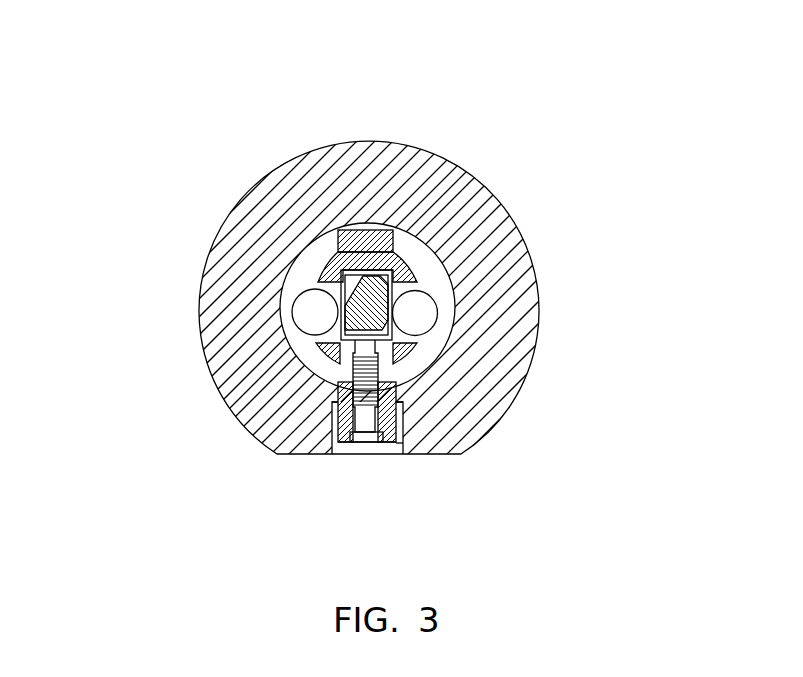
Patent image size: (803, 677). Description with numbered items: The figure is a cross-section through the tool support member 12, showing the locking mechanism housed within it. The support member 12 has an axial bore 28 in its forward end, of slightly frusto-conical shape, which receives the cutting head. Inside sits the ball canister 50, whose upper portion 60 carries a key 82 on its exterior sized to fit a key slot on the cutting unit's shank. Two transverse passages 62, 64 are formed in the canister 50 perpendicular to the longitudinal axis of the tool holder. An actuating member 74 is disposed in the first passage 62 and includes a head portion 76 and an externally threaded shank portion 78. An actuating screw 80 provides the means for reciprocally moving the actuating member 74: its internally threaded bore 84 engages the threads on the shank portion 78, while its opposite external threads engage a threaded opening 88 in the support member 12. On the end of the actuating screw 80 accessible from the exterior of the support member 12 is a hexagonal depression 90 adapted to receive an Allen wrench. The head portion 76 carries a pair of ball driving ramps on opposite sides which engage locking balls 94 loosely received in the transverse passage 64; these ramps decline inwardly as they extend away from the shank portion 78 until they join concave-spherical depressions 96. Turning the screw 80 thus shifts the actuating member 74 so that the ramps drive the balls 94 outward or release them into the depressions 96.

The support member 12 is at (540, 283).
The axial bore 28 is at (322, 272).
The ball canister 50 is at (266, 316).
The upper portion 60 is at (317, 267).
The first longitudinal passage 62 is at (407, 347).
The transverse passage 64 is at (440, 250).
The actuating member 74 is at (388, 360).
The head portion 76 is at (353, 229).
The shank portion 78 is at (337, 381).
The actuating screw 80 is at (341, 462).
The key 82 is at (394, 229).
The internally threaded bore 84 is at (331, 423).
The threaded opening 88 is at (404, 451).
The hexagonal depression 90 is at (367, 443).
The locking balls 94 is at (303, 325).
The concave-spherical depressions 96 is at (405, 252).